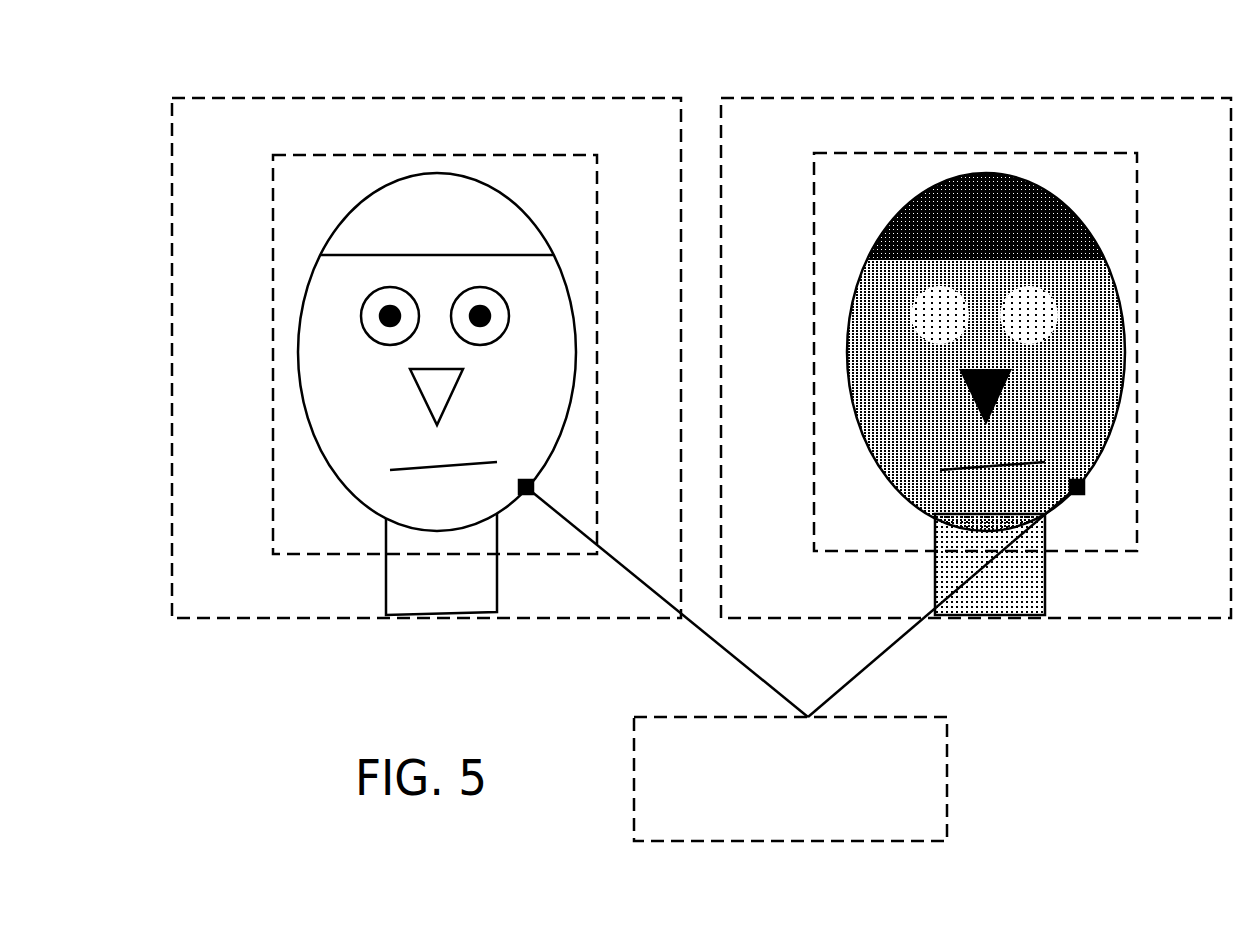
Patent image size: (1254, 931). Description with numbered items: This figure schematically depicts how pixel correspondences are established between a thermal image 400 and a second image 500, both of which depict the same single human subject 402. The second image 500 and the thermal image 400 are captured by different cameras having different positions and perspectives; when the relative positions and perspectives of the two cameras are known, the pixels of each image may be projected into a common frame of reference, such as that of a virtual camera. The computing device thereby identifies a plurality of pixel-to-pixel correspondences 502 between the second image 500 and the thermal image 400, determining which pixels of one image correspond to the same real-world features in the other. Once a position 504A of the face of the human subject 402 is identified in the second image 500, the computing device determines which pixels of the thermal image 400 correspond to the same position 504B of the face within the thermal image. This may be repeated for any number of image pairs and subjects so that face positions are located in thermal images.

The second image 500 is at (284, 97).
The thermal image 400 is at (763, 97).
The human subject 402 is at (343, 223).
The position of the face in the second image 504A is at (272, 354).
The position of the face within the thermal image 504B is at (813, 353).
The pixel-to-pixel correspondences 502 is at (947, 751).